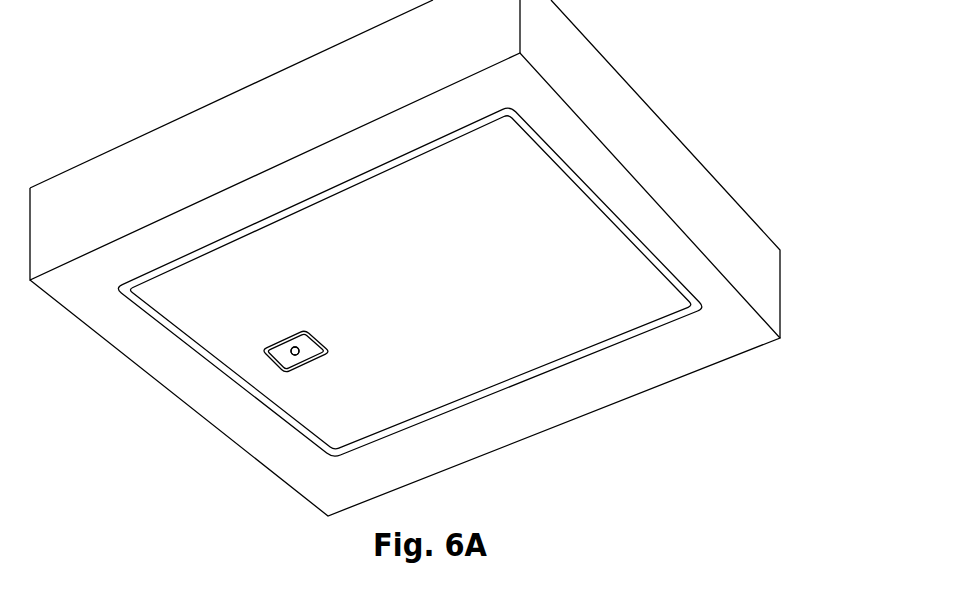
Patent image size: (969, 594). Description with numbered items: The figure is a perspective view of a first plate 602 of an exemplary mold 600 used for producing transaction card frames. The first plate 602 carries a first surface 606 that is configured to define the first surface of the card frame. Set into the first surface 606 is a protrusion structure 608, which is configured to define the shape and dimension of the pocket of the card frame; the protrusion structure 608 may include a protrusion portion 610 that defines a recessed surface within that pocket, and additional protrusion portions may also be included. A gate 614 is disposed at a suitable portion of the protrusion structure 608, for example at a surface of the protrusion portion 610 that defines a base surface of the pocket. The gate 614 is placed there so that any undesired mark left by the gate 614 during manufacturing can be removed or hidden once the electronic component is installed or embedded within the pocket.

The mold 600 is at (112, 36).
The first plate 602 is at (675, 133).
The first surface 606 is at (602, 250).
The protrusion structure 608 is at (286, 334).
The protrusion portion 610 is at (262, 351).
The gate 614 is at (292, 354).